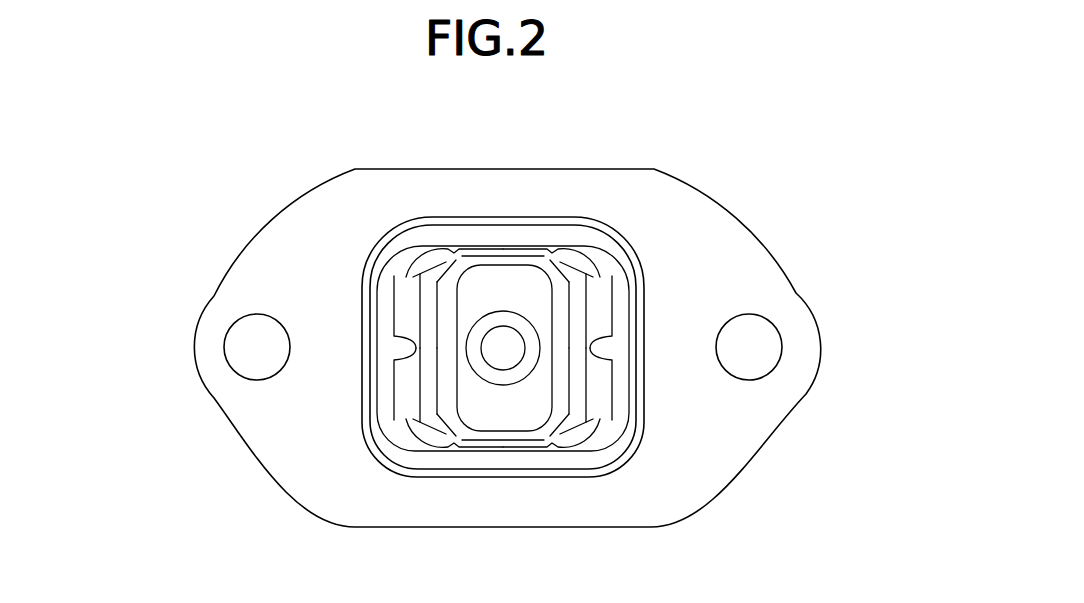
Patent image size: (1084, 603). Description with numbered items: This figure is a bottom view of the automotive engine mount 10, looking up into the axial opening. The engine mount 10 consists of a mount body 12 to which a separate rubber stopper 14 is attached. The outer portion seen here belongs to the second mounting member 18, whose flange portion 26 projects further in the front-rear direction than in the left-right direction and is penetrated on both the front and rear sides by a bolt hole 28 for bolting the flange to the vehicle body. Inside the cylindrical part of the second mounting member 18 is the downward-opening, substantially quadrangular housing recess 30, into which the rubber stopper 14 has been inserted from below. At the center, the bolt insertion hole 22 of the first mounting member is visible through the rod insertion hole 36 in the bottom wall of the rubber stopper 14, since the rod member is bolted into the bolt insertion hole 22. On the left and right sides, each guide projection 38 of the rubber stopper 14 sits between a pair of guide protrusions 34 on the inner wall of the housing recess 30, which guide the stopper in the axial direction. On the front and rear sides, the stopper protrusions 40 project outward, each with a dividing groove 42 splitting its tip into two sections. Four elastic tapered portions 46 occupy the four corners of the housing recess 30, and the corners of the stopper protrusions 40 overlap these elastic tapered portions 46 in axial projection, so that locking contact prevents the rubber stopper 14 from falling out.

The engine mount 10 is at (768, 133).
The mount body 12 is at (770, 203).
The rubber stopper 14 is at (586, 445).
The second mounting member 18 is at (722, 506).
The bolt insertion hole 22 is at (506, 360).
The flange portion 26 is at (323, 467).
The bolt hole 28 is at (260, 321).
The housing recess 30 is at (406, 374).
The guide protrusion 34 is at (451, 248).
The rod insertion hole 36 is at (503, 318).
The guide projection 38 is at (526, 249).
The stopper protrusion 40 is at (403, 310).
The dividing groove 42 is at (405, 352).
The elastic tapered portion 46 is at (407, 266).